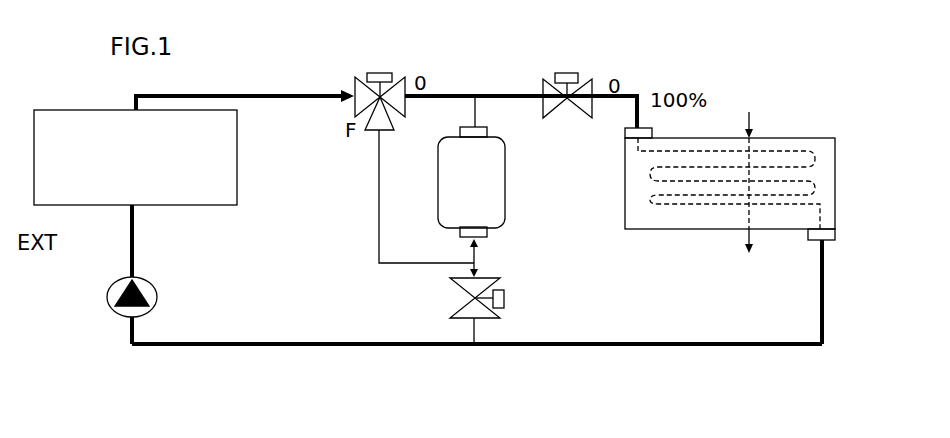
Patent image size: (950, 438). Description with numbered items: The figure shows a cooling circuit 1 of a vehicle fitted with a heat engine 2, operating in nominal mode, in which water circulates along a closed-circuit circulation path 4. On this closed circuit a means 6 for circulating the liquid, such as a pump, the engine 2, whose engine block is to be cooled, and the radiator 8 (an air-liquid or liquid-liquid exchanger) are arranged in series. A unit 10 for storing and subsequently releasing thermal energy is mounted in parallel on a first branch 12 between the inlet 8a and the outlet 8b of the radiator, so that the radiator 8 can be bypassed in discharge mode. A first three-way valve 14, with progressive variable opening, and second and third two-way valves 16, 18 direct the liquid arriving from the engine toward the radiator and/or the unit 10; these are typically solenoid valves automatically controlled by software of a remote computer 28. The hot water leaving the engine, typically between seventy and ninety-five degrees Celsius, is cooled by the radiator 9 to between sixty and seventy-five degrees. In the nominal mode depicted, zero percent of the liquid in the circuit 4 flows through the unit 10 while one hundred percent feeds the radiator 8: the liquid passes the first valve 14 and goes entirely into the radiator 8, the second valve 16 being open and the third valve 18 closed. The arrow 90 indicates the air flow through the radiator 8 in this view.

The cooling circuit 1 is at (72, 294).
The heat engine 2 is at (71, 132).
The closed-circuit circulation path 4 is at (398, 354).
The means for circulating the liquid 6 is at (156, 289).
The radiator 8 is at (824, 130).
The inlet of the radiator 8a is at (653, 131).
The outlet of the radiator 8b is at (825, 242).
The radiator 9 is at (810, 195).
The unit for storing and releasing thermal energy 10 is at (500, 175).
The first branch 12 is at (480, 110).
The first three-way valve 14 is at (388, 74).
The second two-way valve 16 is at (596, 80).
The third two-way valve 18 is at (460, 290).
The remote computer 28 is at (375, 189).
The air flow 90 is at (757, 122).